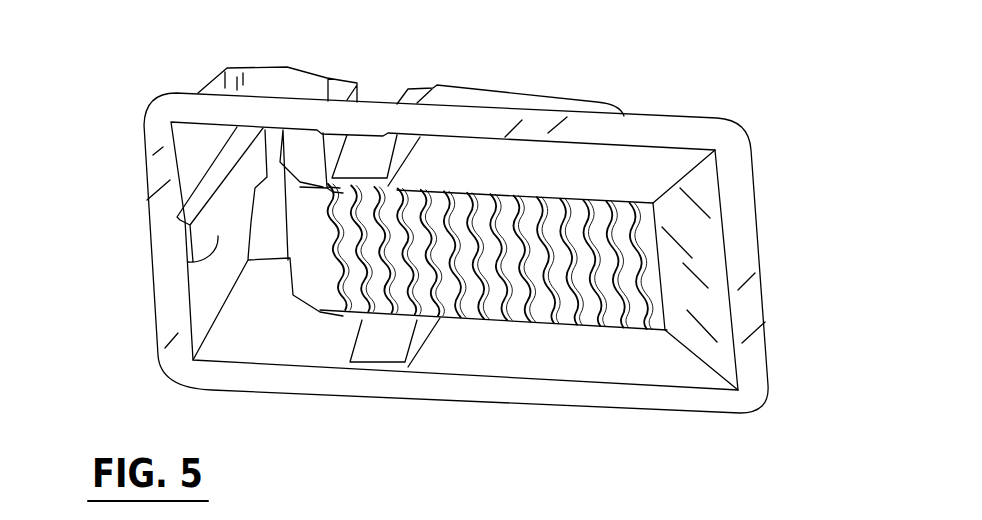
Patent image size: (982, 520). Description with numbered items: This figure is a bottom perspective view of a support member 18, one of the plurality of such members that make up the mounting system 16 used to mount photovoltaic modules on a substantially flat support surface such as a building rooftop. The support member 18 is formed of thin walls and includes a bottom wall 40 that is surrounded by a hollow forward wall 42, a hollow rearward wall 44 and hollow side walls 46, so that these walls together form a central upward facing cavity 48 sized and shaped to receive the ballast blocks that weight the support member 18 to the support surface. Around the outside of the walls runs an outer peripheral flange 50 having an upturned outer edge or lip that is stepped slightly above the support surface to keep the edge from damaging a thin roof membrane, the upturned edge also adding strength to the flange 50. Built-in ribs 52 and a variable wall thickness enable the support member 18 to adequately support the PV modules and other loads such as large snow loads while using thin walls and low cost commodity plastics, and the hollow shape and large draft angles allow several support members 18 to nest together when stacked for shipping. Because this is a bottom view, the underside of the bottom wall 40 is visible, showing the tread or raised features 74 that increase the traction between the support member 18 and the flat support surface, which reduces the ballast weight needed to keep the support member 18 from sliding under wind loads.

The mounting system 16 is at (632, 86).
The support member 18 is at (510, 405).
The bottom wall 40 is at (307, 273).
The forward wall 42 is at (195, 155).
The rearward wall 44 is at (700, 250).
The side walls 46 is at (647, 170).
The cavity 48 is at (448, 348).
The outer peripheral flange 50 is at (398, 385).
The ribs 52 is at (218, 233).
The raised features 74 is at (594, 303).